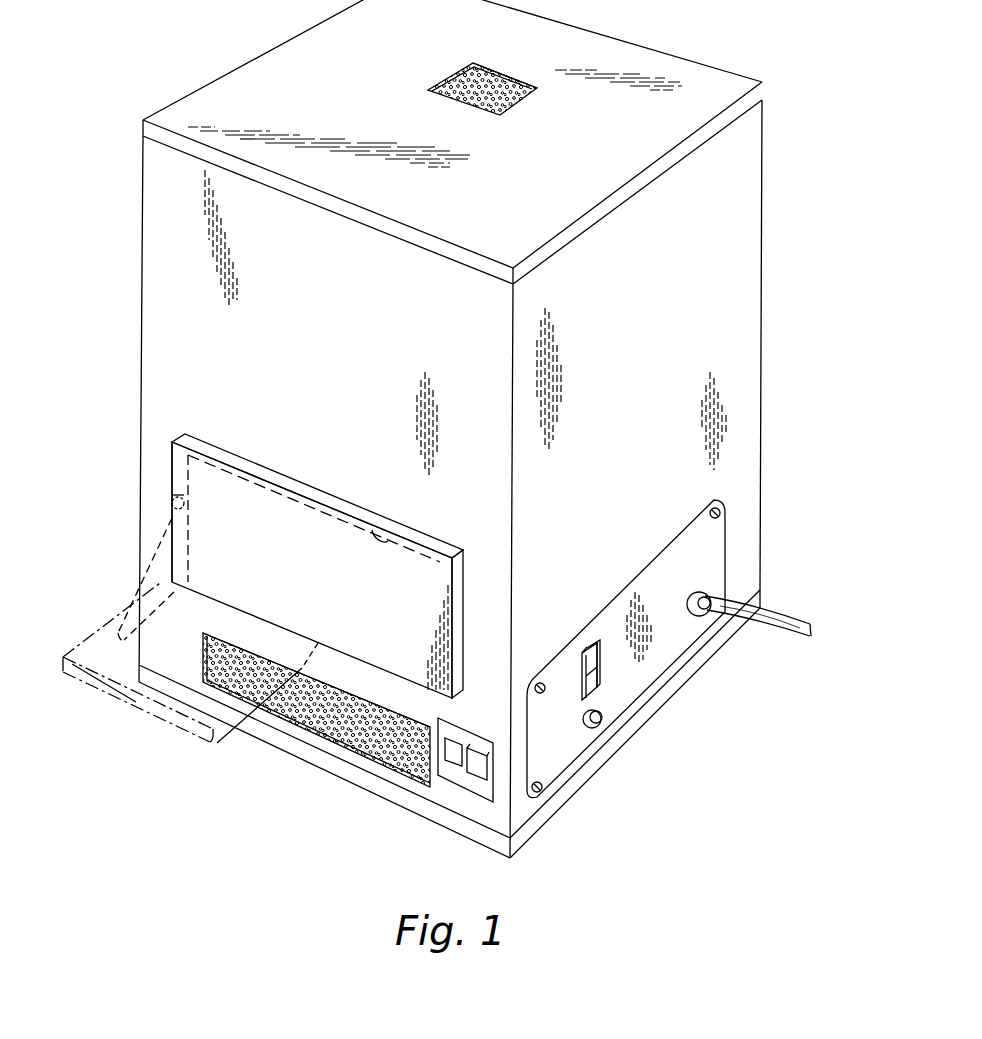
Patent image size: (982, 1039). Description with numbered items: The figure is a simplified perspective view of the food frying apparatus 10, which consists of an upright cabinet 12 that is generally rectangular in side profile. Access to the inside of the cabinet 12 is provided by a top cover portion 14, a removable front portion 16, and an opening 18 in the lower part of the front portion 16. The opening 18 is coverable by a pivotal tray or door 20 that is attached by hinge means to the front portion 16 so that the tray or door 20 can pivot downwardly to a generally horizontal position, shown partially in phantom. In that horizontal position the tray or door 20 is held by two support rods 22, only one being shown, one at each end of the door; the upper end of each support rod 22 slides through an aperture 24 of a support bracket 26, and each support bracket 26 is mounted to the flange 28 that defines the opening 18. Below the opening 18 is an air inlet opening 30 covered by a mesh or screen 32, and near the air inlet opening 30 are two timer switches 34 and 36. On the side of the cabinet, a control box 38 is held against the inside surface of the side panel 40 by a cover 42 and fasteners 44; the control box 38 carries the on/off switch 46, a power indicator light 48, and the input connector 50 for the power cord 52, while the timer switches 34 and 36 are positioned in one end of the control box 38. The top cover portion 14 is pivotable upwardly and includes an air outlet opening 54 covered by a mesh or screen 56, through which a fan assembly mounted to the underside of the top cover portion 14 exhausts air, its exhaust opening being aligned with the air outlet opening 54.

The food frying apparatus 10 is at (474, 429).
The upright cabinet 12 is at (660, 36).
The top cover portion 14 is at (240, 80).
The removable front portion 16 is at (160, 257).
The opening 18 is at (385, 536).
The pivotal tray or door 20 is at (282, 523).
The support rod 22 is at (138, 557).
The aperture 24 is at (178, 498).
The support bracket 26 is at (180, 510).
The flange 28 is at (177, 475).
The air inlet opening 30 is at (342, 743).
The mesh or screen 32 is at (325, 713).
The timer switch 34 is at (435, 775).
The timer switch 36 is at (476, 768).
The control box 38 is at (455, 773).
The side panel 40 is at (733, 355).
The cover 42 is at (713, 537).
The fasteners 44 is at (713, 506).
The on/off switch 46 is at (594, 665).
The power indicator light 48 is at (600, 720).
The input connector 50 is at (704, 592).
The power cord 52 is at (775, 620).
The air outlet opening 54 is at (510, 106).
The mesh or screen 56 is at (485, 75).